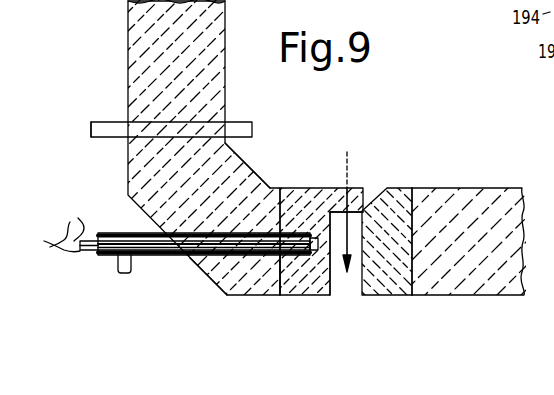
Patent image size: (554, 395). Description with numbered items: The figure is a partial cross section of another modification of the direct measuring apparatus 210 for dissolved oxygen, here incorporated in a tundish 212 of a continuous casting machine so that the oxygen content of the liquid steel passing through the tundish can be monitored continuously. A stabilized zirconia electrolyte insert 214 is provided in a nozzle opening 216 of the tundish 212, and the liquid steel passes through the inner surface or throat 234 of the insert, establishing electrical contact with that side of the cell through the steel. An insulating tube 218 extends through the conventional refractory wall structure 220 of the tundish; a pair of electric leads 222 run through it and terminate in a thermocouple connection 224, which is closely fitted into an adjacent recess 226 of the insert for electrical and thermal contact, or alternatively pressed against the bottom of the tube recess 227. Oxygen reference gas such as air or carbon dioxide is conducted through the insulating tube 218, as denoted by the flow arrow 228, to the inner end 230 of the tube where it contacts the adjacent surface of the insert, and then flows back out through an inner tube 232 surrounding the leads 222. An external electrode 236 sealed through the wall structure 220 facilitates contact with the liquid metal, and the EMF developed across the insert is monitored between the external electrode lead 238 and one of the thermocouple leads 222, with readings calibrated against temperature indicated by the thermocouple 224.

The direct measuring apparatus 210 is at (186, 264).
The tundish 212 is at (473, 190).
The electrolyte insert 214 is at (391, 274).
The nozzle opening 216 is at (413, 204).
The insulating tube 218 is at (221, 258).
The refractory wall structure 220 is at (233, 198).
The electric leads 222 is at (173, 226).
The thermocouple connection 224 is at (335, 268).
The recess 226 is at (328, 266).
The tube recess 227 is at (306, 262).
The flow arrow 228 is at (128, 282).
The inner end of insulating tube 230 is at (302, 238).
The inner tube 232 is at (146, 240).
The throat 234 is at (334, 226).
The external electrode 236 is at (240, 127).
The external electrode lead 238 is at (91, 131).